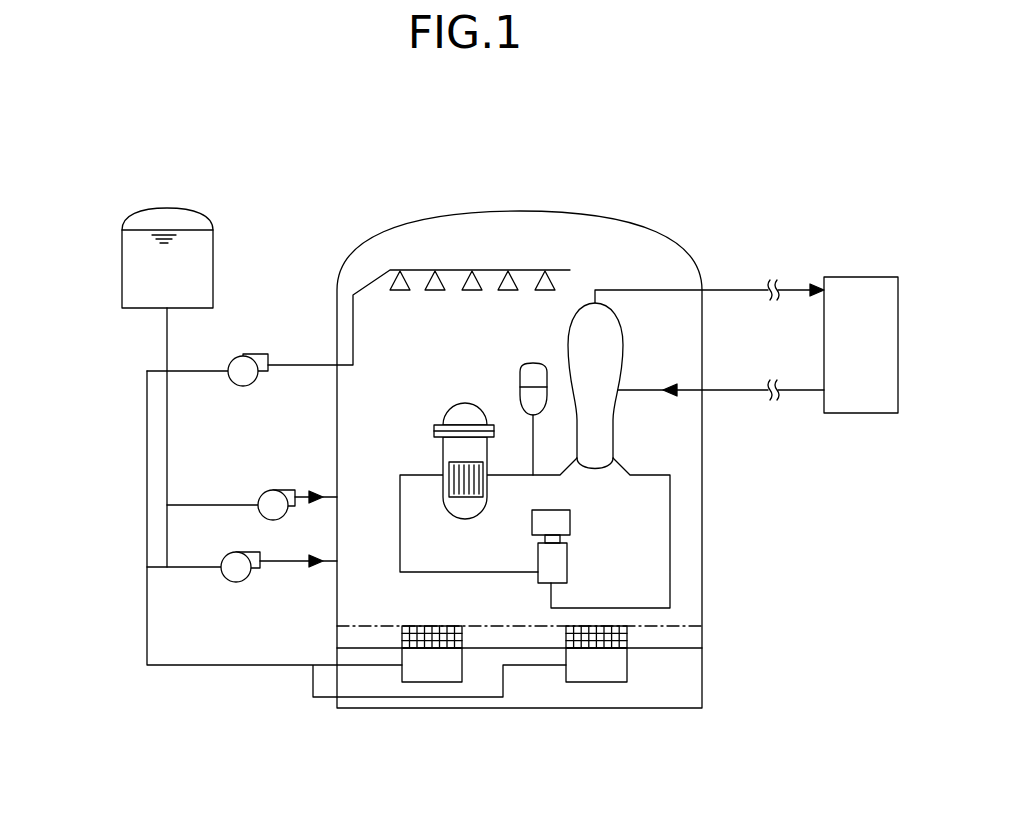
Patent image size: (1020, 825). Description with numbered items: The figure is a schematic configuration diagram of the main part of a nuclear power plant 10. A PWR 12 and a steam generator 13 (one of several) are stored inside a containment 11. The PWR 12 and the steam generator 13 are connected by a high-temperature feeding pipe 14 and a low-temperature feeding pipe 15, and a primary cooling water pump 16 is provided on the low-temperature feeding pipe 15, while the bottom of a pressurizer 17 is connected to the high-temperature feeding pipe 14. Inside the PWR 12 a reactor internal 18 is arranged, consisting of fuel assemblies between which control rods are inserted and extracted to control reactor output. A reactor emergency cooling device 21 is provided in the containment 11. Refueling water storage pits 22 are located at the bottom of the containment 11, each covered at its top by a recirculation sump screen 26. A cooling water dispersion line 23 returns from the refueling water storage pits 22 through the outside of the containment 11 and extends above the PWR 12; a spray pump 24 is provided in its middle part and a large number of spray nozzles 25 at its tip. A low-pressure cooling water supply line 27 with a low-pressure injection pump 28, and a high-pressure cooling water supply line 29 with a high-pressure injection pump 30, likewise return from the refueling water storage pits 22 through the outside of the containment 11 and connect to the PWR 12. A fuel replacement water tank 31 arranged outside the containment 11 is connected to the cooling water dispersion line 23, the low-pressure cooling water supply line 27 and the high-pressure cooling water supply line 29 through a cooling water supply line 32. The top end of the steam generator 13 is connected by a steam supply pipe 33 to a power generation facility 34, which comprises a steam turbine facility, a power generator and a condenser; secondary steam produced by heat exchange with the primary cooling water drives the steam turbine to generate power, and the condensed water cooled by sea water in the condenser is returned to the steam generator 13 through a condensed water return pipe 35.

The nuclear power plant 10 is at (658, 184).
The containment 11 is at (403, 225).
The PWR 12 is at (444, 413).
The steam generator 13 is at (623, 336).
The high-temperature feeding pipe 14 is at (570, 463).
The low-temperature feeding pipe 15 is at (670, 542).
The primary cooling water pump 16 is at (568, 550).
The pressurizer 17 is at (520, 372).
The reactor internal 18 is at (462, 463).
The reactor emergency cooling device 21 is at (118, 519).
The refueling water storage pit 22 is at (432, 665).
The cooling water dispersion line 23 is at (288, 365).
The spray pump 24 is at (243, 354).
The spray nozzle 25 is at (400, 293).
The recirculation sump screen 26 is at (434, 626).
The low-pressure cooling water supply line 27 is at (290, 565).
The low-pressure injection pump 28 is at (237, 582).
The high-pressure cooling water supply line 29 is at (220, 504).
The high-pressure injection pump 30 is at (272, 490).
The fuel replacement water tank 31 is at (122, 268).
The cooling water supply line 32 is at (167, 437).
The steam supply pipe 33 is at (735, 290).
The power generation facility 34 is at (862, 277).
The condensed water return pipe 35 is at (735, 395).